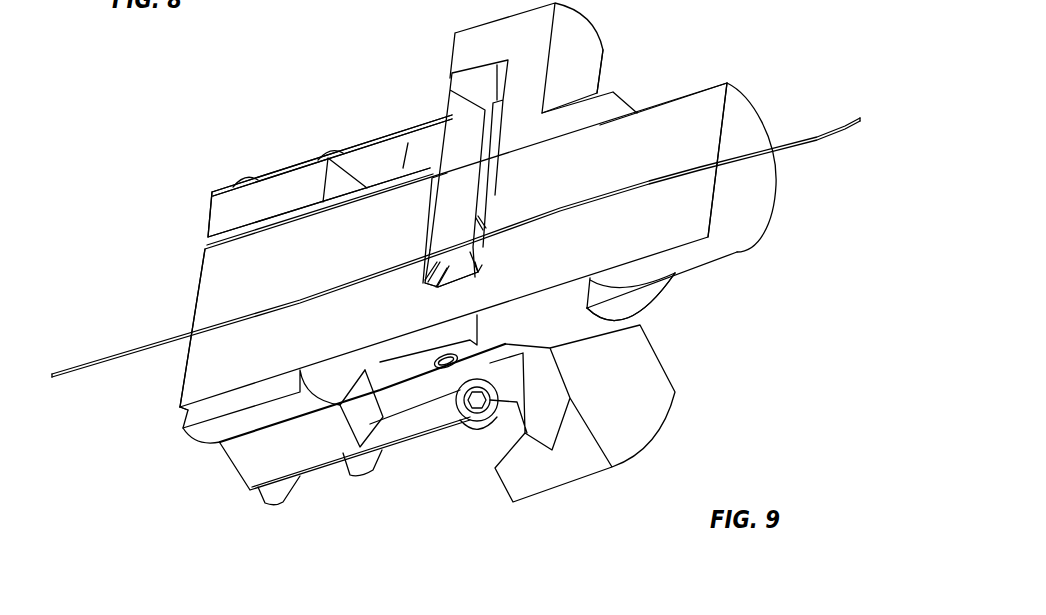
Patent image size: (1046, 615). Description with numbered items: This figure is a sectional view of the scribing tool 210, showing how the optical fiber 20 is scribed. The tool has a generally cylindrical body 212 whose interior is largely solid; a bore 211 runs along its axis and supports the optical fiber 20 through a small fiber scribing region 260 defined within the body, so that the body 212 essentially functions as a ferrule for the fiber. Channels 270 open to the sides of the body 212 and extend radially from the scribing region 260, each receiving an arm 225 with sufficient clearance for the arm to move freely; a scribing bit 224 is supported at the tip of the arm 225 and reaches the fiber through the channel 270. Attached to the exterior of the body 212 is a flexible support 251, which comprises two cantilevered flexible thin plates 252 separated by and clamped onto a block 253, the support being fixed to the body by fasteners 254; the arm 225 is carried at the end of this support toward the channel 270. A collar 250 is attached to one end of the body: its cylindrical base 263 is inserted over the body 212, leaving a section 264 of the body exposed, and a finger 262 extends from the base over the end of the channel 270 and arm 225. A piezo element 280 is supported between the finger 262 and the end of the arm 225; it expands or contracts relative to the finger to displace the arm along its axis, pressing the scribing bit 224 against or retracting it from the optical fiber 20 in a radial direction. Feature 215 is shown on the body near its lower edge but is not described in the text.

The optical fiber 20 is at (818, 134).
The scribing tool 210 is at (168, 530).
The bore 211 is at (227, 322).
The cylindrical body 212 is at (192, 286).
The rounded bottom lip 215 is at (192, 438).
The scribing bit 224 is at (483, 225).
The arm 225 is at (473, 112).
The collar 250 is at (676, 312).
The flexible support 251 is at (356, 69).
The flexible thin plate 252 is at (378, 190).
The block 253 is at (290, 182).
The fastener 254 is at (247, 181).
The fiber scribing region 260 is at (421, 283).
The finger 262 is at (498, 22).
The cylindrical base 263 is at (667, 278).
The exposed section of the body 264 is at (687, 112).
The channel 270 is at (427, 210).
The piezo element 280 is at (460, 90).